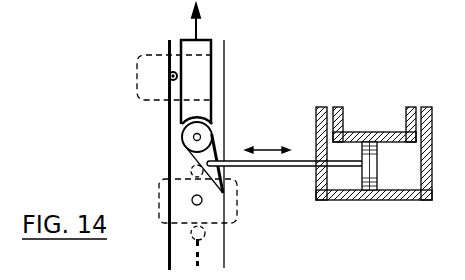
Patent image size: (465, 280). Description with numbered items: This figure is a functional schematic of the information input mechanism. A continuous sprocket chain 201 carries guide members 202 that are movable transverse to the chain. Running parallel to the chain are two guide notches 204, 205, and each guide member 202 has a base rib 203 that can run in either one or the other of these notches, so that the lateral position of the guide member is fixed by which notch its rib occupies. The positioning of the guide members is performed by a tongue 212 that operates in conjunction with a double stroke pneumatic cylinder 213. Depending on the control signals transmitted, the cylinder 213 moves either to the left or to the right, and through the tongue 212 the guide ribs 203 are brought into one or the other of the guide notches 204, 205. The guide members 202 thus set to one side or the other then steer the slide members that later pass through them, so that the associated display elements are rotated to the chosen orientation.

The continuous sprocket chain 201 is at (200, 255).
The guide member 202 is at (150, 83).
The base rib 203 is at (170, 76).
The guide notch 204 is at (171, 107).
The guide notch 205 is at (224, 107).
The tongue 212 is at (184, 146).
The double stroke pneumatic cylinder 213 is at (402, 172).